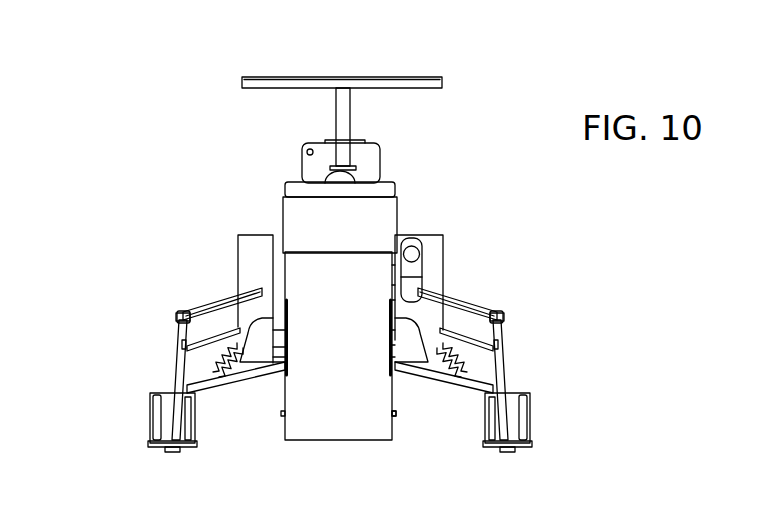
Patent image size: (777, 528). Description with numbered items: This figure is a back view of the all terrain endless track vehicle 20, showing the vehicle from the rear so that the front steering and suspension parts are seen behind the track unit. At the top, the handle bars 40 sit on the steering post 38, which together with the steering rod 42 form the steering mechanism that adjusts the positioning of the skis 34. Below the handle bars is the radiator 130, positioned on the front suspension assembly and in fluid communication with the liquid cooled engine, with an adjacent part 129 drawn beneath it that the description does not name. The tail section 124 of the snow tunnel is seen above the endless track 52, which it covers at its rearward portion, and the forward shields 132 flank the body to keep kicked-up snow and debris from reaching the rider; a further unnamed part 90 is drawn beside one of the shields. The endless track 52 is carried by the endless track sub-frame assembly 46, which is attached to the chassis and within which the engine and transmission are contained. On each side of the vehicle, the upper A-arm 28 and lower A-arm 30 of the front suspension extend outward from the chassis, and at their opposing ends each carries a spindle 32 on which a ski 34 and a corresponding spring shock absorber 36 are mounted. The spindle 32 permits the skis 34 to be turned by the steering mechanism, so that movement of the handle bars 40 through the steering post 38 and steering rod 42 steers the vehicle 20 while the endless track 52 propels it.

The all terrain endless track vehicle 20 is at (110, 192).
The handle bars 40 is at (442, 83).
The steering post 38 is at (336, 103).
The radiator 130 is at (372, 162).
The mounting plate 129 is at (390, 182).
The tail section 124 is at (318, 240).
The endless track 52 is at (327, 336).
The canister 90 is at (413, 240).
The forward shields 132 is at (258, 235).
The upper A-arm 28 is at (217, 298).
The steering rod 42 is at (460, 333).
The spring shock absorbers 36 is at (203, 378).
The spindle 32 is at (502, 378).
The lower A-arm 30 is at (268, 378).
The skis 34 is at (175, 453).
The endless track sub-frame assembly 46 is at (410, 420).